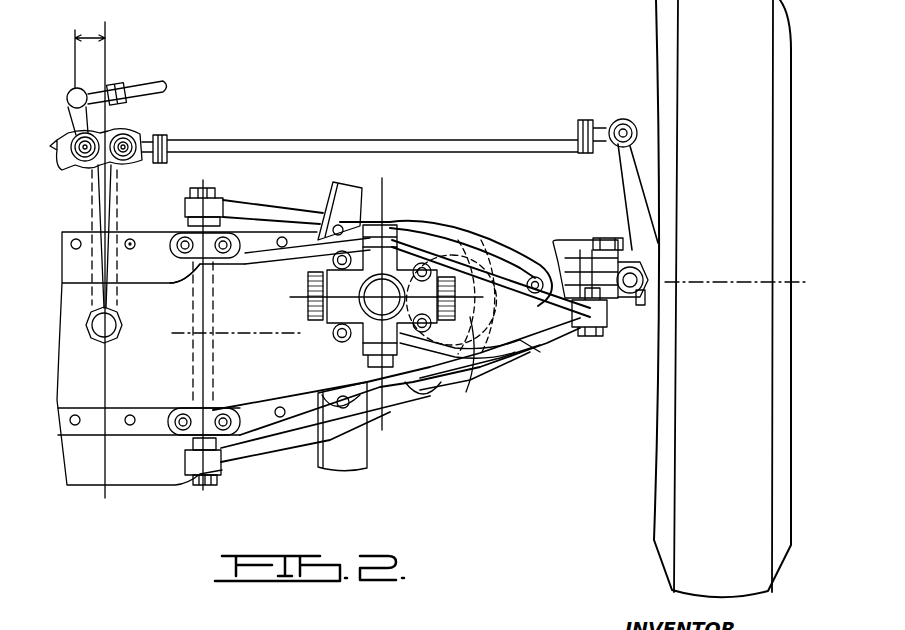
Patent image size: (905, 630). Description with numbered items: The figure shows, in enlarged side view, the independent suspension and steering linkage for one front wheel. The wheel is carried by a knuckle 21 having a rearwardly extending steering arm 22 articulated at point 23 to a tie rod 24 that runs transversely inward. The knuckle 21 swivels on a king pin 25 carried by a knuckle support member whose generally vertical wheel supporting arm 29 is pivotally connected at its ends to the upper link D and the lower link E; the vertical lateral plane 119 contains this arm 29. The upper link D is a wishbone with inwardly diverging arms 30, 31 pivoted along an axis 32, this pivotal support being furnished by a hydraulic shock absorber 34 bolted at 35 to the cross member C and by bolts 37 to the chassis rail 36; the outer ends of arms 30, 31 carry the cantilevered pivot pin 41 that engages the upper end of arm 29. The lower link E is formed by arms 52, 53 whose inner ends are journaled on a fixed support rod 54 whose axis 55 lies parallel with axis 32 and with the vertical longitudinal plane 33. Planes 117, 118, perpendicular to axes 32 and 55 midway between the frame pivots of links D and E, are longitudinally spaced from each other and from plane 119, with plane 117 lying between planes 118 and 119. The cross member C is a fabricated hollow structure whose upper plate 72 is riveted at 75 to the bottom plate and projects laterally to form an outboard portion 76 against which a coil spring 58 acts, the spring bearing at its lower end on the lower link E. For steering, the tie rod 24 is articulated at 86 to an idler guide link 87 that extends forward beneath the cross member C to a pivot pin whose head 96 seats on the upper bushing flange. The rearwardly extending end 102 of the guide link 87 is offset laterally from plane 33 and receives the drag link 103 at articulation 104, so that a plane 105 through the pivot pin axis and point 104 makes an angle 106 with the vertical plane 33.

The vertical lateral plane 119 is at (701, 292).
The cross member C is at (153, 398).
The upper plate 72 is at (137, 297).
The rivets 75 is at (130, 239).
The arm 52 is at (252, 183).
The lower link E is at (262, 208).
The arm 53 is at (250, 442).
The vertical plane 33 is at (111, 49).
The plane 105 is at (73, 34).
The angle 106 is at (105, 30).
The articulation point 104 is at (83, 88).
The drag link 103 is at (160, 80).
The rearwardly extending end 102 is at (108, 120).
The tie rod 24 is at (62, 152).
The tie rod articulation 86 is at (128, 133).
The idler guide link 87 is at (113, 178).
The head 96 is at (122, 325).
The support rod 54 is at (210, 330).
The plane 118 is at (270, 345).
The axis of support 55 is at (203, 140).
The articulation point 23 is at (622, 118).
The steering arm 22 is at (624, 181).
The chassis rail 36 is at (357, 182).
The axis 32 is at (386, 184).
The bolts 37 is at (333, 259).
The hydraulic shock absorber 34 is at (327, 328).
The arm 30 is at (457, 238).
The upper link D is at (450, 240).
The plane 117 is at (510, 252).
The coil spring 58 is at (531, 249).
The knuckle 21 is at (657, 250).
The wheel supporting arm 29 is at (640, 257).
The king pin 25 is at (643, 302).
The pivot pin 41 is at (572, 330).
The outboard portion 76 is at (500, 358).
The arm 31 is at (467, 377).
The bolt connection 35 is at (427, 400).